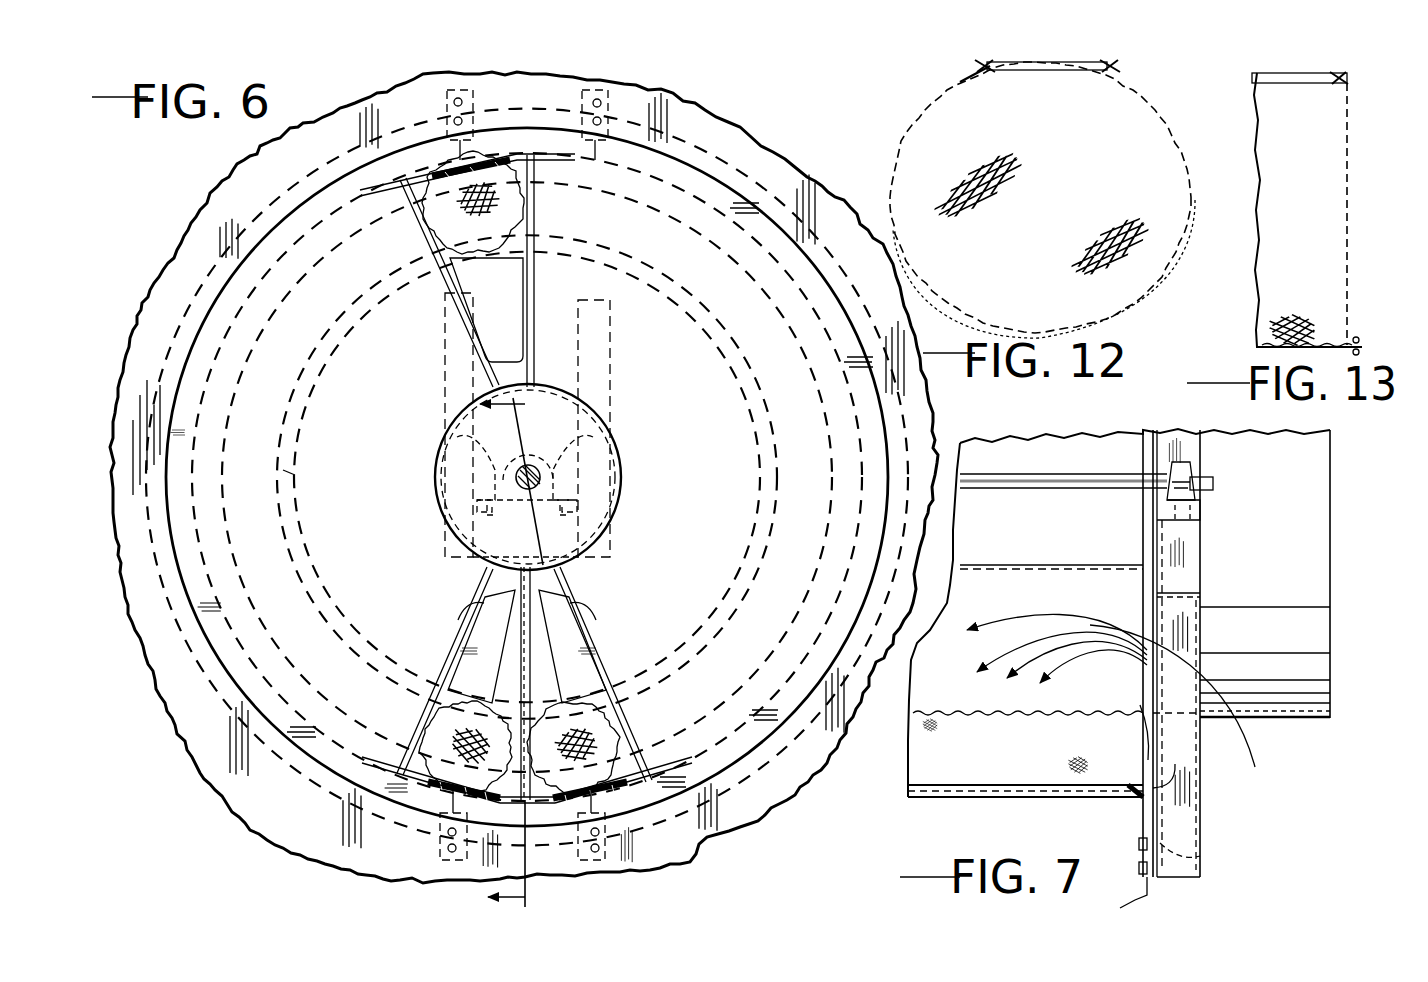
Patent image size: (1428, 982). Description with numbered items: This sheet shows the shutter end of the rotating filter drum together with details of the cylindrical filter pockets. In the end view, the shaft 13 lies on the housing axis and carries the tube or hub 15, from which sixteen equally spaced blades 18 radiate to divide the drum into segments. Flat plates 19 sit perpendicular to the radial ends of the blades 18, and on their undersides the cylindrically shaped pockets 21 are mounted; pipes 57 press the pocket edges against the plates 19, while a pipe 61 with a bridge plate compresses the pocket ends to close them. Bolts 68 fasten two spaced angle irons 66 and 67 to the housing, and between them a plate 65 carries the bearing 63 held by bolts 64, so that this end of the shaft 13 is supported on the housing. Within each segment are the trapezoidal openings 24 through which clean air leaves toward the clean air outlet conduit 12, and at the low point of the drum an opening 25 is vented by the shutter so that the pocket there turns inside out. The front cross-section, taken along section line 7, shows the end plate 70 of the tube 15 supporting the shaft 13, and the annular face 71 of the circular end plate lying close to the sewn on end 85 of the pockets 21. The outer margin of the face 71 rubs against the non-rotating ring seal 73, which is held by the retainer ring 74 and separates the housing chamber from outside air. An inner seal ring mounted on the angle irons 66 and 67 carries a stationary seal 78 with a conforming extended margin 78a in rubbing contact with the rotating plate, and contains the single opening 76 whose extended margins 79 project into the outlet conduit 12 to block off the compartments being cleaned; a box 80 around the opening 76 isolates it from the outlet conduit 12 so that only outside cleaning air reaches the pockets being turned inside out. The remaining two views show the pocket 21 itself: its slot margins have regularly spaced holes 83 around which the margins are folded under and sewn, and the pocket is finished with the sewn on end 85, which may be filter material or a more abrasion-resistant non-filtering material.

In FIG. 6, the section line 7— 7 is at (502, 655).
In FIG. 7, the clean air outlet conduit 12 is at (1328, 488).
In FIG. 6, the shaft 13 is at (532, 466).
In FIG. 7, the shaft 13 is at (1068, 474).
In FIG. 7, the tube or hub 15 is at (1009, 565).
In FIG. 6, the blades 18 is at (440, 290).
In FIG. 6, the flat plates 19 is at (366, 190).
In FIG. 6, the cylindrically shaped pockets 21 is at (524, 228).
In FIG. 7, the cylindrically shaped pockets 21 is at (983, 718).
In FIG. 12, the cylindrically shaped pockets 21 is at (1024, 332).
In FIG. 13, the cylindrically shaped pockets 21 is at (1310, 337).
In FIG. 6, the openings 24 is at (494, 306).
In FIG. 6, the opening 25 is at (500, 656).
In FIG. 6, the pipes 57 is at (446, 170).
In FIG. 7, the pipes 57 is at (1006, 798).
In FIG. 6, the pipe 61 is at (462, 160).
In FIG. 7, the pipe 61 is at (1131, 798).
In FIG. 6, the bearing 63 is at (600, 436).
In FIG. 7, the bearing 63 is at (1186, 462).
In FIG. 6, the bolts 64 is at (457, 437).
In FIG. 7, the bolts 64 is at (1202, 482).
In FIG. 6, the plate 65 is at (522, 507).
In FIG. 7, the plate 65 is at (1196, 518).
In FIG. 6, the angle iron 66 is at (444, 381).
In FIG. 6, the angle iron 67 is at (610, 352).
In FIG. 6, the bolts 68 is at (455, 100).
In FIG. 7, the bolts 68 is at (1195, 852).
In FIG. 7, the end plate 70 is at (1143, 520).
In FIG. 7, the annular face 71 is at (1148, 760).
In FIG. 7, the ring seal 73 is at (1143, 840).
In FIG. 7, the retainer ring 74 is at (1173, 763).
In FIG. 6, the opening 76 is at (583, 611).
In FIG. 6, the seal 78 is at (288, 472).
In FIG. 7, the seal 78 is at (1267, 833).
In FIG. 6, the extended margin 78a is at (490, 632).
In FIG. 7, the extended margin 78a is at (1160, 566).
In FIG. 7, the extended margins 79 is at (1160, 592).
In FIG. 7, the box 80 is at (1204, 620).
In FIG. 12, the holes 83 is at (984, 68).
In FIG. 13, the holes 83 is at (1345, 78).
In FIG. 13, the sewn on end 85 is at (1350, 120).